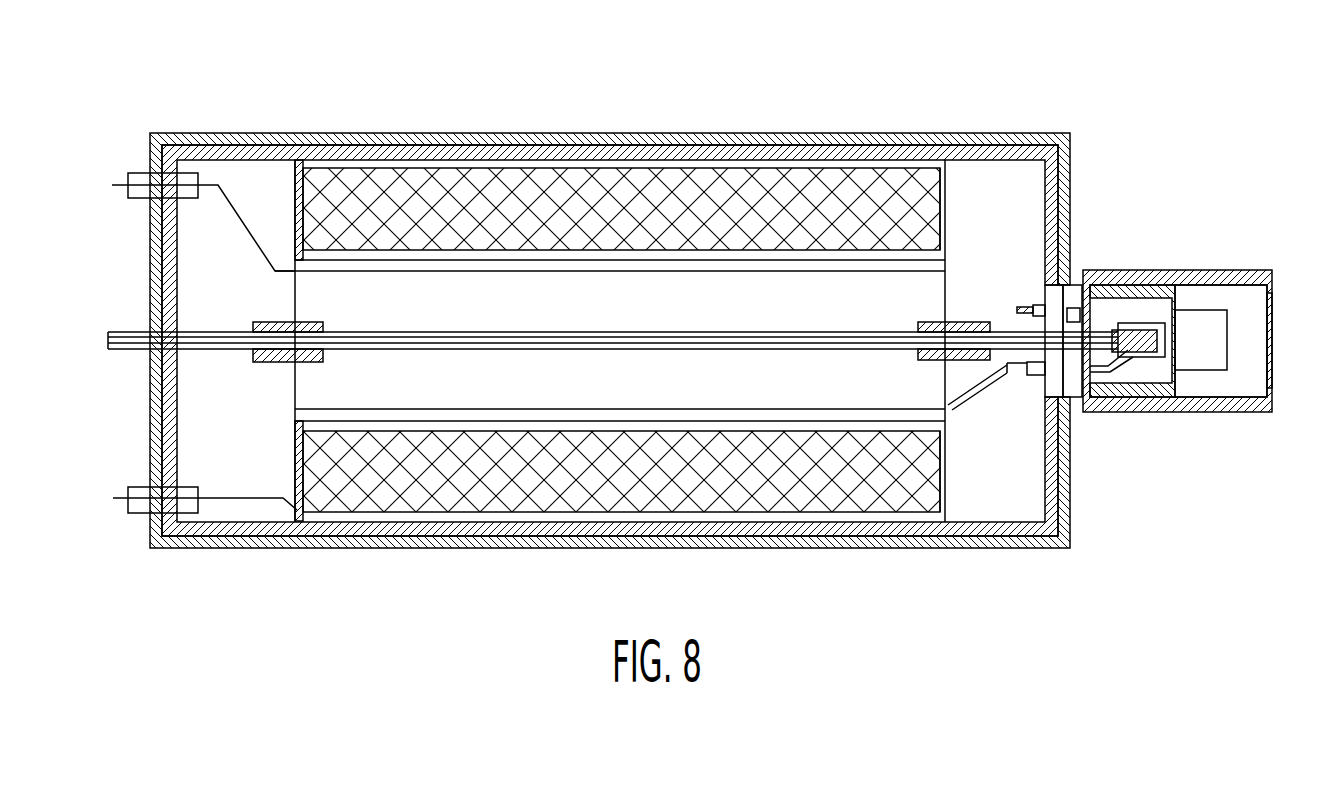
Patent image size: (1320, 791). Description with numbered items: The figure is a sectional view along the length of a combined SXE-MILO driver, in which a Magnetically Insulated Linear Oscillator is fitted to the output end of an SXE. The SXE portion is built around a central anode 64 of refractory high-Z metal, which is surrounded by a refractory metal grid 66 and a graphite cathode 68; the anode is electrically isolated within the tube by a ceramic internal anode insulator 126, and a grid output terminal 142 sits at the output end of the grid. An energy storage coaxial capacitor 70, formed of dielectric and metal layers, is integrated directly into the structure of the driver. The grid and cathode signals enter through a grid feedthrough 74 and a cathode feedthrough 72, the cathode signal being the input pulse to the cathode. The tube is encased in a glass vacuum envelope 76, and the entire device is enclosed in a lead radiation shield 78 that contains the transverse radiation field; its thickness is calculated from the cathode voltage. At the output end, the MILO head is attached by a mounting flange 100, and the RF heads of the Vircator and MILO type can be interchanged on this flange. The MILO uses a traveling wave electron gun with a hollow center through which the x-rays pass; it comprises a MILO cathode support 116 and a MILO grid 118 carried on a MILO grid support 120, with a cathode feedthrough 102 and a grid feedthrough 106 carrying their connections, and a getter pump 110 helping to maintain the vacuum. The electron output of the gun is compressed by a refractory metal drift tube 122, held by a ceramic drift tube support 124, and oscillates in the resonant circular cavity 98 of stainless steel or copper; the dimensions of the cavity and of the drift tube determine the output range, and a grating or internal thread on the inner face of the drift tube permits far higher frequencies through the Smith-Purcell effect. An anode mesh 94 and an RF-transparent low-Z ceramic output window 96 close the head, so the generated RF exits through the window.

The anode 64 is at (110, 349).
The grid 66 is at (460, 272).
The cathode 68 is at (377, 422).
The coaxial capacitor 70 is at (375, 196).
The cathode feedthrough 72 is at (118, 507).
The grid feedthrough 74 is at (111, 184).
The glass vacuum envelope 76 is at (203, 525).
The radiation shield 78 is at (227, 136).
The anode mesh 94 is at (1257, 413).
The output window 96 is at (1280, 298).
The resonant circular cavity 98 is at (1240, 305).
The mounting flange 100 is at (1068, 398).
The cathode feedthrough 102 is at (1020, 308).
The grid feedthrough 106 is at (1010, 377).
The getter pump 110 is at (1038, 305).
The MILO cathode support 116 is at (1068, 286).
The MILO grid 118 is at (1147, 360).
The MILO grid support 120 is at (1140, 370).
The drift tube 122 is at (1205, 322).
The drift tube support 124 is at (1125, 286).
The internal anode insulator 126 is at (958, 322).
The grid output terminal 142 is at (957, 360).